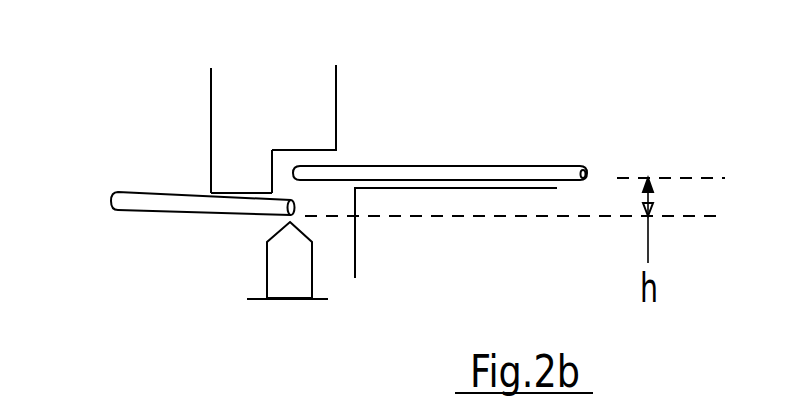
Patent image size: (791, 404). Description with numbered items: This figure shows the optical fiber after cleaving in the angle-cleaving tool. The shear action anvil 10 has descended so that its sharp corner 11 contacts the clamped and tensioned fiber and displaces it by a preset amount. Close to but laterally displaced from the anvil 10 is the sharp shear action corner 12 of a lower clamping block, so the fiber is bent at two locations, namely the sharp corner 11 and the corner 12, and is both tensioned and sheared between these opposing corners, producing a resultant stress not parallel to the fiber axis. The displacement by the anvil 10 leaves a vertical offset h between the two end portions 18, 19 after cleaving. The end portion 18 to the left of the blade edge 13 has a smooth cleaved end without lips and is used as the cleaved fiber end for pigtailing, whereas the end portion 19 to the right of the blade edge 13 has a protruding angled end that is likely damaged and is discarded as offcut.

The shear action anvil 10 is at (343, 95).
The sharp corner of the anvil 11 is at (263, 191).
The sharp shear action corner 12 is at (362, 198).
The blade edge 13 is at (288, 232).
The end portion 18 is at (137, 213).
The end portion 19 is at (568, 162).